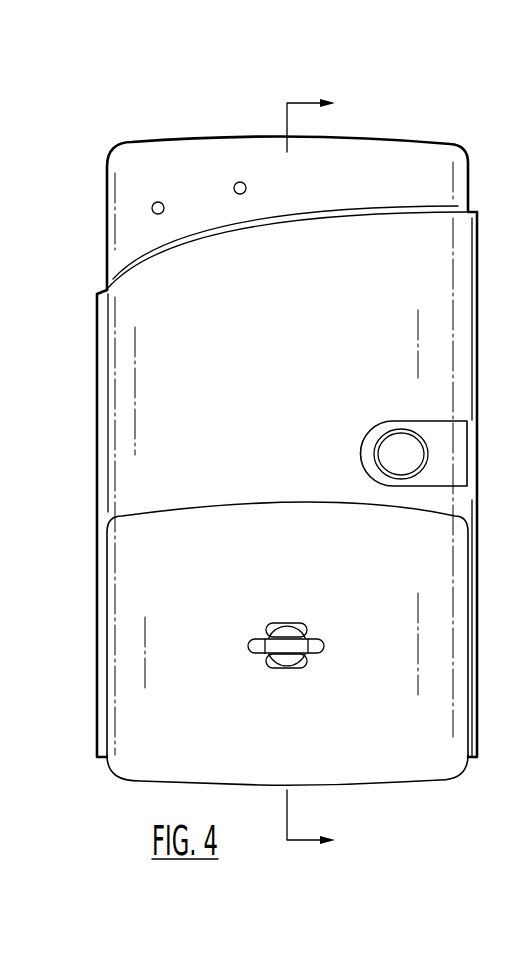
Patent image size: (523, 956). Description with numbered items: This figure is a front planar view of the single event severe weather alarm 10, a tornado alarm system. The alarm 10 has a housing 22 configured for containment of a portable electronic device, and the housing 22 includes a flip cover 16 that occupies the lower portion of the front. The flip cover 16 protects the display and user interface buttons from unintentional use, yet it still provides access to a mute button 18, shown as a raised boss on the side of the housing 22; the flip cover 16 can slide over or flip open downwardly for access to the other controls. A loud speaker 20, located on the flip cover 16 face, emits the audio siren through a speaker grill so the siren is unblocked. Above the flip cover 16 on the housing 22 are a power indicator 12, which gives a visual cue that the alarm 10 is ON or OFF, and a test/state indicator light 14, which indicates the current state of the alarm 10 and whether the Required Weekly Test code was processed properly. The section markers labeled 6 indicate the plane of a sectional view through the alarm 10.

The single event severe weather alarm 10 is at (66, 143).
The power indicator 12 is at (152, 210).
The test/state indicator light 14 is at (236, 183).
The flip cover 16 is at (173, 342).
The mute button 18 is at (413, 456).
The loud speaker 20 is at (272, 648).
The housing 22 is at (402, 157).
The section line 6- 6 is at (320, 471).